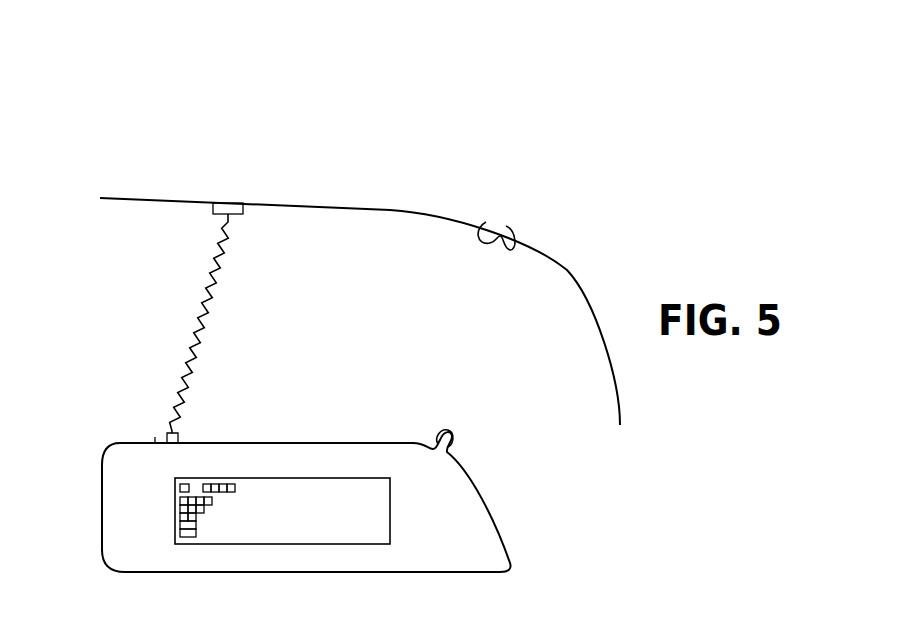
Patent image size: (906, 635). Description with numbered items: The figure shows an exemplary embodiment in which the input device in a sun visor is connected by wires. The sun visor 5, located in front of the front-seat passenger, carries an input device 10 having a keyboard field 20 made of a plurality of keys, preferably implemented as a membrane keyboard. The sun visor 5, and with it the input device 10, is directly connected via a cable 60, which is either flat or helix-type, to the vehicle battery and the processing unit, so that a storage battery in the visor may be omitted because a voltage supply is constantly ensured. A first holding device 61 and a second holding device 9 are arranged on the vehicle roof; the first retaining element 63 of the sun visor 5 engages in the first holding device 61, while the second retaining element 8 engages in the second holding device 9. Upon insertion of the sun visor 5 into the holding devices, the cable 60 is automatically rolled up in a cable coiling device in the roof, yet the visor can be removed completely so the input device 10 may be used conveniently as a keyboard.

The sun visor 5 is at (493, 518).
The second retaining element 8 is at (452, 436).
The second holding device 9 is at (504, 225).
The input device 10 is at (323, 544).
The keyboard field 20 is at (200, 518).
The cable 60 is at (197, 325).
The first holding device 61 is at (226, 210).
The first retaining element 63 is at (155, 437).